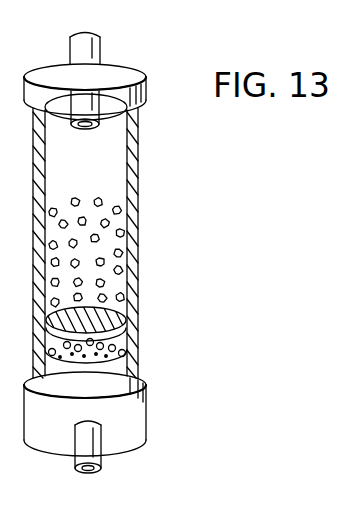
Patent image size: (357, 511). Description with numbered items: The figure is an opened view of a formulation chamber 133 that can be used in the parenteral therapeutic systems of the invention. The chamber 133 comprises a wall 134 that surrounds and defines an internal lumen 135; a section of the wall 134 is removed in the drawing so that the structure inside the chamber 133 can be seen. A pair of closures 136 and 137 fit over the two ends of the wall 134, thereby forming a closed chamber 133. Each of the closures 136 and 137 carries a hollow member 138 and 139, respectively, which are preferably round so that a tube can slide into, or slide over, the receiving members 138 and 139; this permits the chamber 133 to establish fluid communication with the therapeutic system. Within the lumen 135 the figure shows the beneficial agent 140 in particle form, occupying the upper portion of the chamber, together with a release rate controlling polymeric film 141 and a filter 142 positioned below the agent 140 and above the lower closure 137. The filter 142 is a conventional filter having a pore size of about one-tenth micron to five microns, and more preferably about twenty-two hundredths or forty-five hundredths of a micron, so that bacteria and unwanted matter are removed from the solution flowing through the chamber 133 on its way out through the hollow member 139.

The formulation chamber 133 is at (153, 146).
The wall 134 is at (138, 177).
The internal lumen 135 is at (107, 178).
The closure 136 is at (117, 73).
The closure 137 is at (147, 403).
The hollow member 138 is at (92, 33).
The hollow member 139 is at (103, 470).
The agent 140 is at (124, 233).
The release rate controlling polymeric film 141 is at (117, 327).
The filter 142 is at (120, 355).